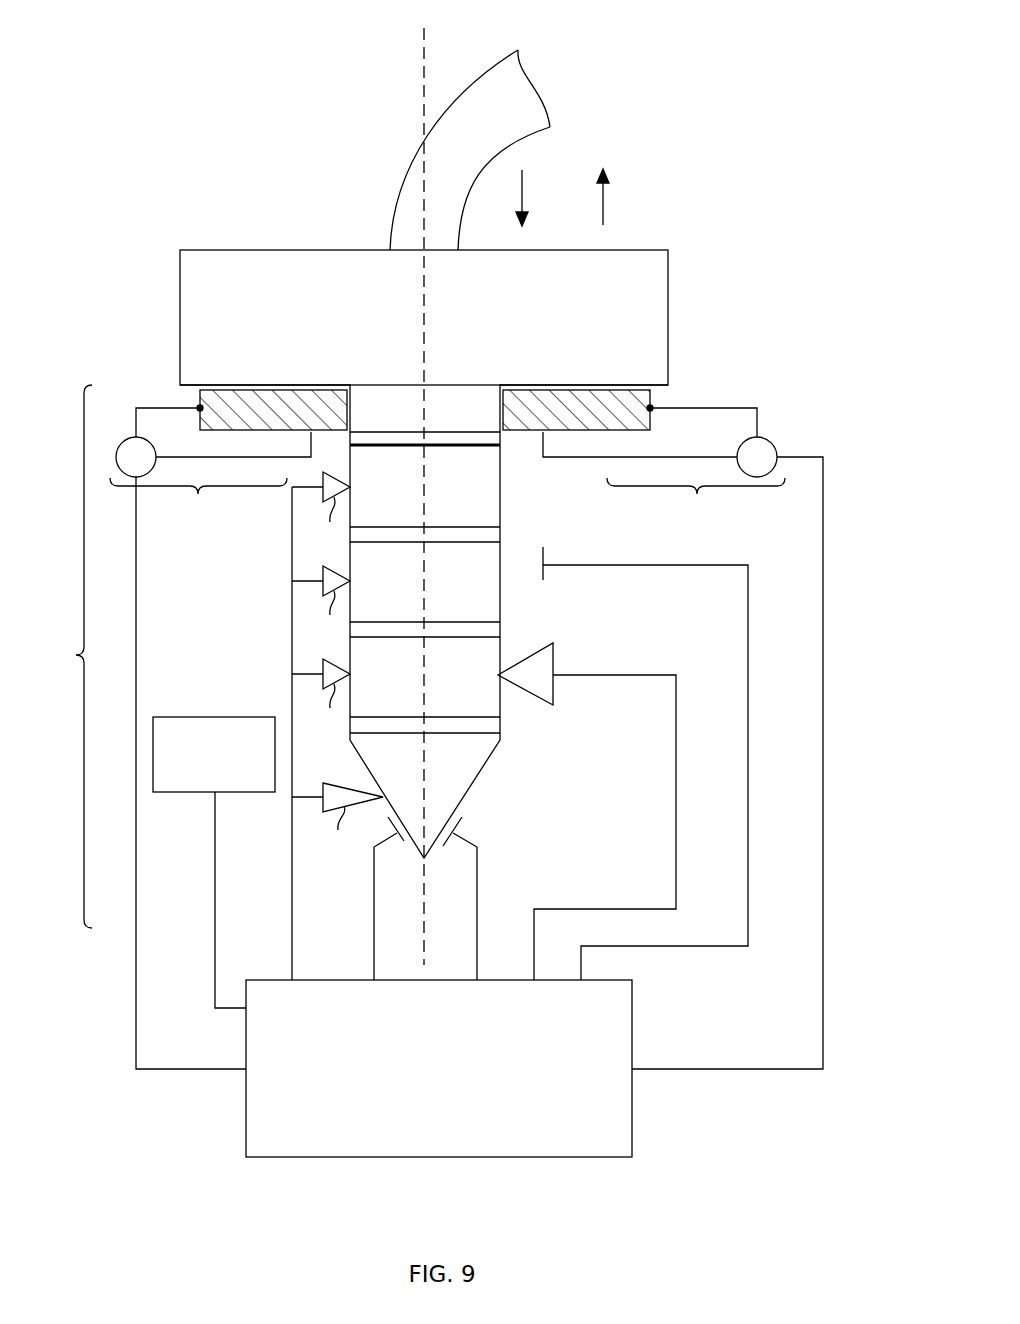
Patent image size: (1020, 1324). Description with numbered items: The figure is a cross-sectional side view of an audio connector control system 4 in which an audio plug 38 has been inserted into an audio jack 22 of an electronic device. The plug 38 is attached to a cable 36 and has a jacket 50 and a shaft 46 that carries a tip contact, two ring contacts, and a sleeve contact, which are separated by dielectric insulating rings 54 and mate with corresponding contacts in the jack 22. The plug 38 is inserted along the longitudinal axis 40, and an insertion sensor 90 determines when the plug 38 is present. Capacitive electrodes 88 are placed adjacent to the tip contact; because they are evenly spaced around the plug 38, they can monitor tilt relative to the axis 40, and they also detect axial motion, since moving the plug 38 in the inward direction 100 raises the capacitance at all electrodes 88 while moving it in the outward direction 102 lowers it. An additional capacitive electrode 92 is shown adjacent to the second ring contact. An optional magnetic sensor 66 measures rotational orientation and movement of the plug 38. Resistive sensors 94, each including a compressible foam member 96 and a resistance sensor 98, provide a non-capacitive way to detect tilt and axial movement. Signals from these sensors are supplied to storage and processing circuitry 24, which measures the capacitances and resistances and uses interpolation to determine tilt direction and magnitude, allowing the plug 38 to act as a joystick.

The probe 4 is at (303, 895).
The audio jack 22 is at (66, 656).
The storage and processing circuitry 24 is at (322, 1158).
The cable 36 is at (401, 172).
The audio plug 38 is at (657, 216).
The longitudinal axis 40 is at (424, 40).
The shaft 46 is at (500, 487).
The jacket 50 is at (668, 305).
The insulating rings 54 is at (493, 437).
The magnetic sensor 66 is at (213, 717).
The electrodes 88 is at (460, 823).
The insertion sensor 90 is at (548, 660).
The capacitive electrode 92 is at (545, 563).
The resistive sensors 94 is at (447, 501).
The compressible foam member 96 is at (200, 400).
The resistance sensor 98 is at (119, 444).
The inward direction 100 is at (522, 197).
The outward direction 102 is at (603, 197).